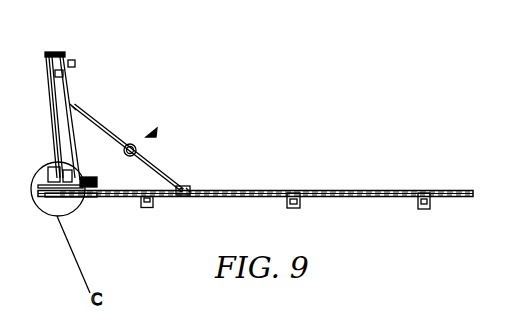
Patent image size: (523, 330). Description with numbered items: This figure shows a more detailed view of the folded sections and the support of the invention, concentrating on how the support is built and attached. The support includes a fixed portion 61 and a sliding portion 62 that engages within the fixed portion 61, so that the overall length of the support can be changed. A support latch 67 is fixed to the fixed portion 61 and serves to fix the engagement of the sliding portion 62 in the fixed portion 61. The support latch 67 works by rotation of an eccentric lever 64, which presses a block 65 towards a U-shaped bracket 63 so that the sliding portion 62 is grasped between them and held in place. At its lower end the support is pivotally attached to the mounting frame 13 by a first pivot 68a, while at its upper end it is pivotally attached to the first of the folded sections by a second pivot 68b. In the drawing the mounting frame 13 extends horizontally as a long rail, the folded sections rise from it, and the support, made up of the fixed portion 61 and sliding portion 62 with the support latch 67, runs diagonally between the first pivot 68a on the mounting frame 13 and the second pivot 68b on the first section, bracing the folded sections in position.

The mounting frame 13 is at (248, 192).
The fixed portion 61 is at (183, 187).
The sliding portion 62 is at (101, 128).
The U-shaped bracket 63 is at (127, 153).
The eccentric lever 64 is at (131, 147).
The block 65 is at (132, 156).
The support latch 67 is at (156, 130).
The first pivot 68a is at (189, 191).
The second pivot 68b is at (73, 107).